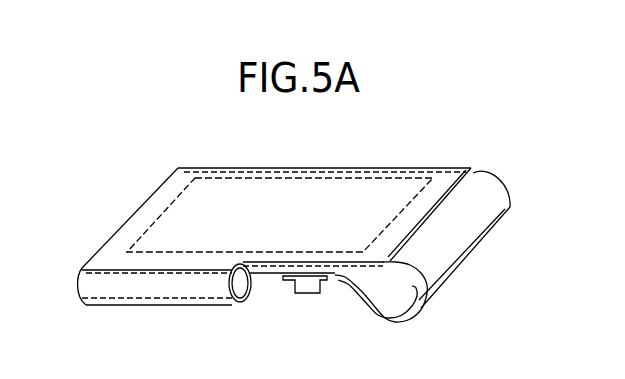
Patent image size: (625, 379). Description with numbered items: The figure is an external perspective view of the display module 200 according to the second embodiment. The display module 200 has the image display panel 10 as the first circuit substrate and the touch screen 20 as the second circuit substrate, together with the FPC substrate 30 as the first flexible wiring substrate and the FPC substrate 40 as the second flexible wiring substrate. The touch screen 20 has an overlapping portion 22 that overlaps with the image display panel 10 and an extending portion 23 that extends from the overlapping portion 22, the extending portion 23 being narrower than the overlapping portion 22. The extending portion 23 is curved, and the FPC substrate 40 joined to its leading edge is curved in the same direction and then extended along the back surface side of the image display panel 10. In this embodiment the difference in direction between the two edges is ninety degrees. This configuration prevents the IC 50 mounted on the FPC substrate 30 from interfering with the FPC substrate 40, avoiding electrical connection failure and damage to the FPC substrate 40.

The display module 200 is at (510, 92).
The image display panel 10 is at (472, 168).
The touch screen 20 is at (267, 168).
The overlapping portion 22 is at (147, 220).
The extending portion 23 is at (255, 280).
The FPC substrate 30 is at (490, 195).
The FPC substrate 40 is at (97, 280).
The IC 50 is at (310, 294).